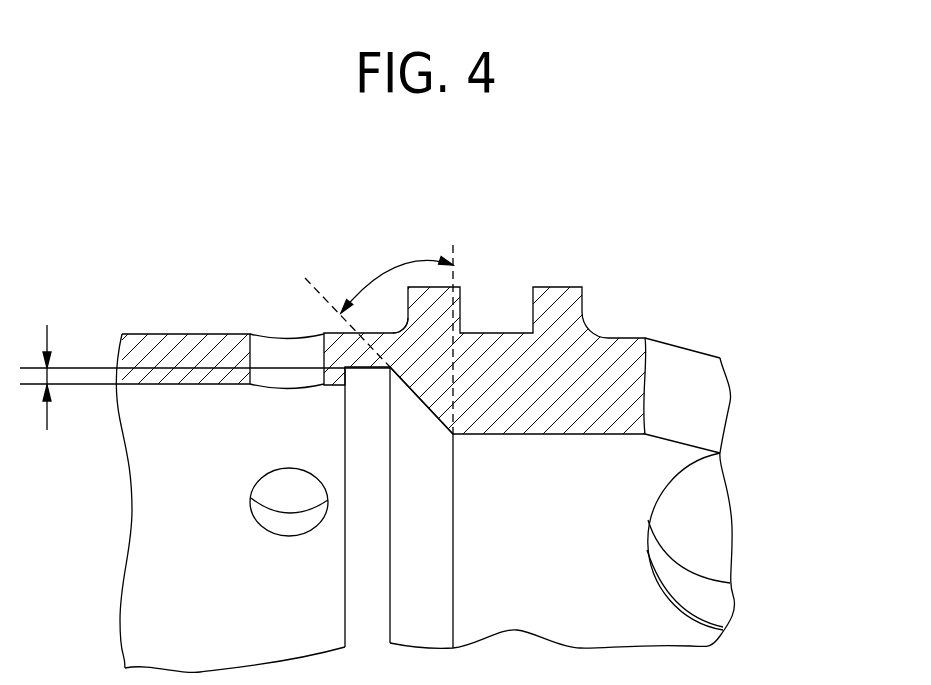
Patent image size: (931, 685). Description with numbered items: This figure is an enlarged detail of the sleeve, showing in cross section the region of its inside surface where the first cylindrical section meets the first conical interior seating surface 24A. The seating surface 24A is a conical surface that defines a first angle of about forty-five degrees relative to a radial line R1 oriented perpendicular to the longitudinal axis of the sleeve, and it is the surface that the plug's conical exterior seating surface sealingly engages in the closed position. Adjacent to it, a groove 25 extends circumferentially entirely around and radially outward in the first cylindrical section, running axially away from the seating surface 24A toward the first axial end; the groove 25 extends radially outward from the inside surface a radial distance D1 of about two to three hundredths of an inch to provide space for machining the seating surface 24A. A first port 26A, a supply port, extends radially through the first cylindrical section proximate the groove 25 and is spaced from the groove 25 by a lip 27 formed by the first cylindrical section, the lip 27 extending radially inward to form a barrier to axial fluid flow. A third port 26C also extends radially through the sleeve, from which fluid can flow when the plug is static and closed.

The first conical interior seating surface 24A is at (431, 418).
The groove 25 is at (368, 367).
The first port 26A is at (277, 350).
The third port 26C is at (688, 525).
The lip 27 is at (323, 334).
The radial distance D1 is at (48, 410).
The radial line R1 is at (455, 259).